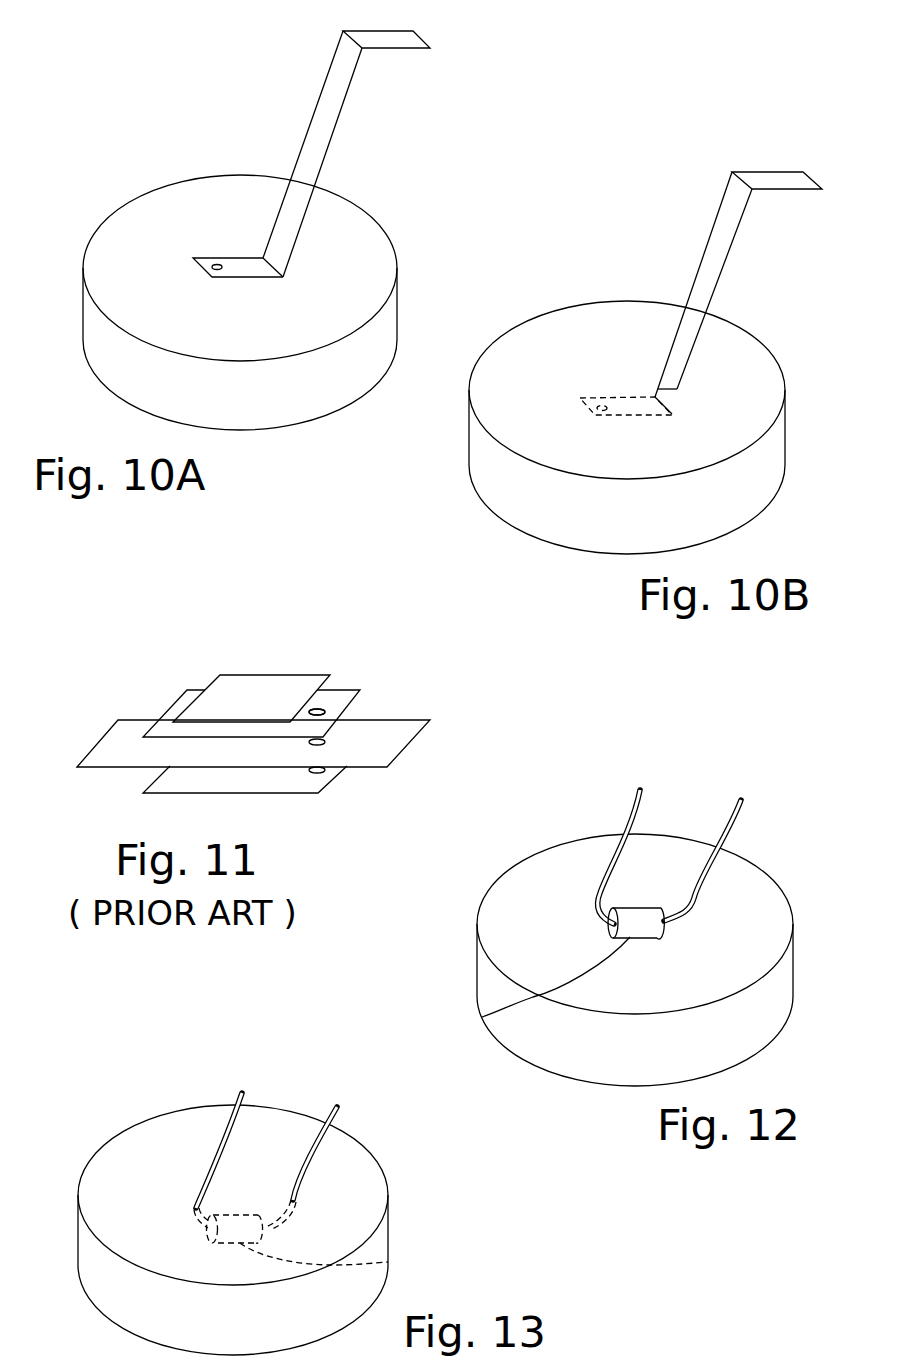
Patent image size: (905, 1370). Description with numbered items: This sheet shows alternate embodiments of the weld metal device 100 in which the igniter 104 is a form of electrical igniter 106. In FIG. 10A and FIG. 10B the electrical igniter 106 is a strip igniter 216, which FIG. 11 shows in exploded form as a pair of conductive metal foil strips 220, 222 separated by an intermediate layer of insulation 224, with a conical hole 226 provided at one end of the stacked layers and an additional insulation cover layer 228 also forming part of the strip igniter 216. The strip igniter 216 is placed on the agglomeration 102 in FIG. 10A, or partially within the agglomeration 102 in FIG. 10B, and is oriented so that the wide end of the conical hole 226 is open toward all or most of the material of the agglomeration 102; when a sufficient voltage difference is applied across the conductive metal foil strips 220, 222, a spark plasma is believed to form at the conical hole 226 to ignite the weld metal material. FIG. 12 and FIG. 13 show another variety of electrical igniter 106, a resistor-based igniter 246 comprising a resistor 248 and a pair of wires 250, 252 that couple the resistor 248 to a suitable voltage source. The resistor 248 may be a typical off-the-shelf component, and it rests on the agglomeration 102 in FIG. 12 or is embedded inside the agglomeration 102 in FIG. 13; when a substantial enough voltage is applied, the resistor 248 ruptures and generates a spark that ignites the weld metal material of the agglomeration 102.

In FIG. 10A, the weld metal device 100 is at (241, 219).
In FIG. 12, the weld metal device 100 is at (598, 896).
In FIG. 13, the weld metal device 100 is at (236, 1174).
In FIG. 10A, the agglomeration 102 is at (100, 350).
In FIG. 12, the agglomeration 102 is at (598, 940).
In FIG. 13, the agglomeration 102 is at (208, 1201).
In FIG. 10A, the igniter 104 is at (281, 154).
In FIG. 10A, the electrical igniter 106 is at (281, 143).
In FIG. 12, the electrical igniter 106 is at (575, 869).
In FIG. 13, the electrical igniter 106 is at (287, 1129).
In FIG. 10A, the strip igniter 216 is at (281, 154).
In FIG. 11, the strip igniter 216 is at (262, 723).
In FIG. 11, the conductive metal foil strip 220 is at (180, 705).
In FIG. 11, the conductive metal foil strip 222 is at (262, 785).
In FIG. 11, the intermediate layer of insulation 224 is at (377, 725).
In FIG. 10A, the conical hole 226 is at (212, 246).
In FIG. 11, the conical hole 226 is at (342, 685).
In FIG. 11, the insulation cover layer 228 is at (253, 690).
In FIG. 12, the resistor-based igniter 246 is at (565, 867).
In FIG. 13, the resistor-based igniter 246 is at (157, 1107).
In FIG. 12, the resistor 248 is at (482, 1017).
In FIG. 13, the resistor 248 is at (390, 1262).
In FIG. 12, the wire 250 is at (647, 795).
In FIG. 13, the wire 250 is at (258, 1107).
In FIG. 12, the wire 252 is at (737, 803).
In FIG. 13, the wire 252 is at (320, 1147).